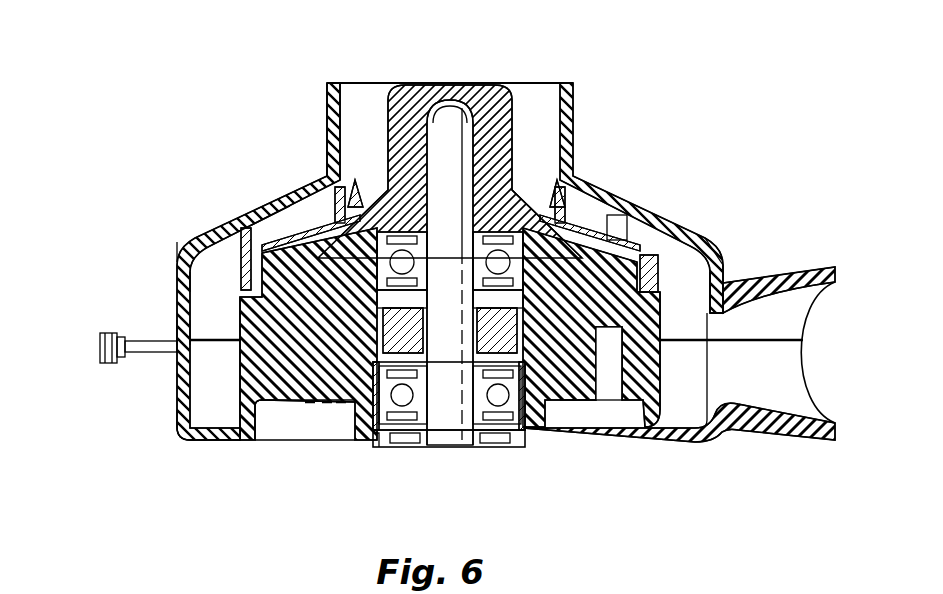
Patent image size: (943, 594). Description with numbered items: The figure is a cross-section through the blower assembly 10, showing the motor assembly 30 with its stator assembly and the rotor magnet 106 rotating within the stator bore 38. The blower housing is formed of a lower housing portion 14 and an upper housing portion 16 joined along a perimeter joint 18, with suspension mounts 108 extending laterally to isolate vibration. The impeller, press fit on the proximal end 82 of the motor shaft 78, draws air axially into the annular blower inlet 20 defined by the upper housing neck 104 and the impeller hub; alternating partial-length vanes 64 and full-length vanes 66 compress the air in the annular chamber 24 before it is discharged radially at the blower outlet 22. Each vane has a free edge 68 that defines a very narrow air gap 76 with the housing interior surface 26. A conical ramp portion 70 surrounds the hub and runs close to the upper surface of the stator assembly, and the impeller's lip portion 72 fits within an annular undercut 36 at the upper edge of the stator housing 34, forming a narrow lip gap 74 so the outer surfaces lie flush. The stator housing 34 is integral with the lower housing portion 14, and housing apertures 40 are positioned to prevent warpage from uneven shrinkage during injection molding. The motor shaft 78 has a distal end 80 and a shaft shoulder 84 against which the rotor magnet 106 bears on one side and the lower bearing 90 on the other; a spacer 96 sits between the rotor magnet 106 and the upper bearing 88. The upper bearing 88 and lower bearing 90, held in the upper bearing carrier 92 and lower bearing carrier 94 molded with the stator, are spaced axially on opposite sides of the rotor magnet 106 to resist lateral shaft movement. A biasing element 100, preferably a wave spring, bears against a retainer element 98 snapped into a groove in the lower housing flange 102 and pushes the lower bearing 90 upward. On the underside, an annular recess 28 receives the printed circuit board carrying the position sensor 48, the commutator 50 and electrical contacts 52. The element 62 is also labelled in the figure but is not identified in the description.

The blower assembly 10 is at (660, 77).
The lower housing portion 14 is at (182, 433).
The upper housing portion 16 is at (208, 225).
The perimeter joint 18 is at (203, 337).
The blower inlet 20 is at (543, 93).
The blower outlet 22 is at (797, 299).
The annular chamber 24 is at (217, 277).
The housing interior surface 26 is at (177, 247).
The annular recess 28 is at (262, 430).
The motor assembly 30 is at (563, 403).
The stator housing 34 is at (238, 393).
The annular undercut 36 is at (240, 302).
The stator bore 38 is at (287, 363).
The housing apertures 40 is at (620, 362).
The position sensor 48 is at (587, 402).
The commutator 50 is at (293, 406).
The electrical contacts 52 is at (341, 404).
The shaft bore 62 is at (430, 135).
The partial-length vanes 64 is at (346, 180).
The full-length vanes 66 is at (600, 150).
The free edge 68 is at (252, 210).
The ramp portion 70 is at (600, 207).
The lip portion 72 is at (690, 258).
The lip gap 74 is at (705, 282).
The air gap 76 is at (333, 192).
The motor shaft 78 is at (439, 128).
The distal end 80 is at (442, 397).
The proximal end 82 is at (457, 103).
The shaft shoulder 84 is at (420, 447).
The upper bearing 88 is at (560, 130).
The lower bearing 90 is at (483, 433).
The upper bearing carrier 92 is at (722, 252).
The lower bearing carrier 94 is at (523, 412).
The spacer 96 is at (603, 372).
The retainer element 98 is at (405, 432).
The biasing element 100 is at (150, 352).
The lower housing flange 102 is at (527, 400).
The upper housing neck 104 is at (326, 110).
The rotor magnet 106 is at (590, 390).
The suspension mounts 108 is at (98, 348).